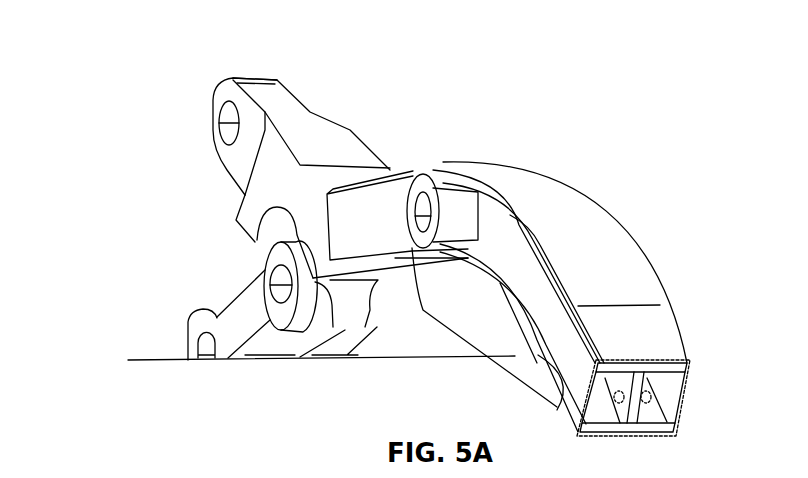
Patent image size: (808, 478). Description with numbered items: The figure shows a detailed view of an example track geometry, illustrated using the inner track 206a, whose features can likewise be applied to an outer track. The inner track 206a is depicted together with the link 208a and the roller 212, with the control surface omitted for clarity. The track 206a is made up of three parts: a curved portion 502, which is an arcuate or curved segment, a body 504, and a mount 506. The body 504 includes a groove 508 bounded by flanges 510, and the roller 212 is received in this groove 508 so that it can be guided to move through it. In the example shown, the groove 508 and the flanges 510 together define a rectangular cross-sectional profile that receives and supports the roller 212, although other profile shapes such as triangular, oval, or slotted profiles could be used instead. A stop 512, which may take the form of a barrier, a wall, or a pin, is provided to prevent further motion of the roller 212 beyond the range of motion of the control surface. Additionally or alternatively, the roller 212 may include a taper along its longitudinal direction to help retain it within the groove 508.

The inner track 206a is at (178, 84).
The mount 506 is at (197, 137).
The body 504 is at (262, 198).
The link 208a is at (188, 330).
The flanges 510 is at (413, 167).
The groove 508 is at (500, 227).
The roller 212 is at (427, 250).
The curved portion 502 is at (558, 292).
The stop 512 is at (650, 393).